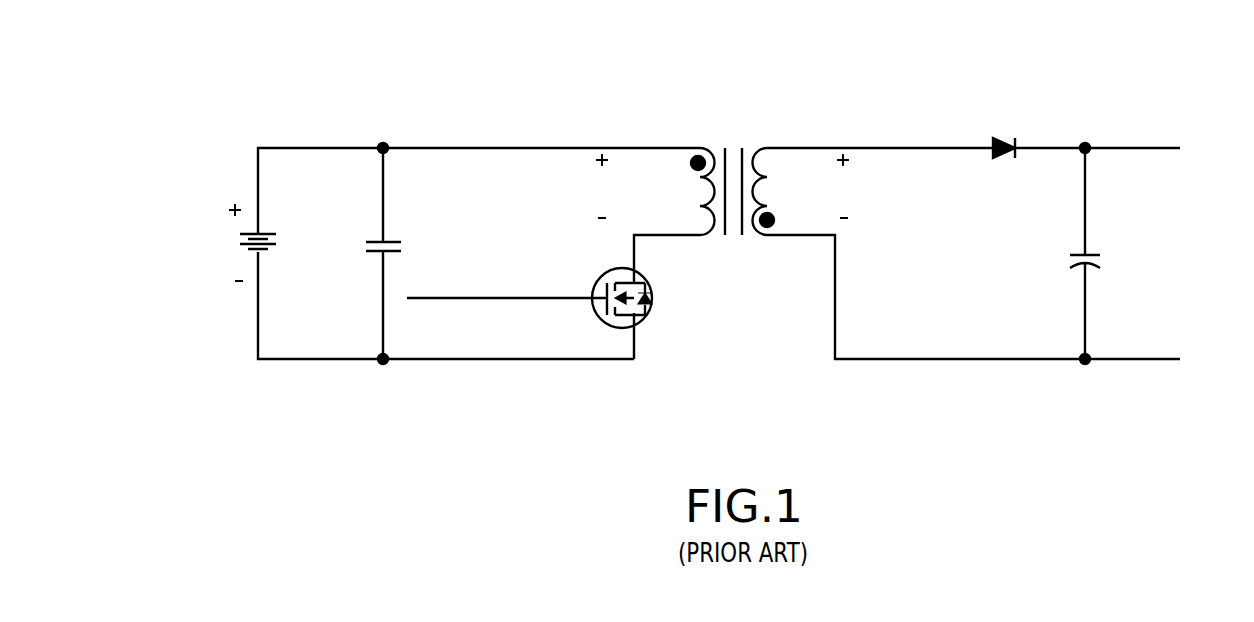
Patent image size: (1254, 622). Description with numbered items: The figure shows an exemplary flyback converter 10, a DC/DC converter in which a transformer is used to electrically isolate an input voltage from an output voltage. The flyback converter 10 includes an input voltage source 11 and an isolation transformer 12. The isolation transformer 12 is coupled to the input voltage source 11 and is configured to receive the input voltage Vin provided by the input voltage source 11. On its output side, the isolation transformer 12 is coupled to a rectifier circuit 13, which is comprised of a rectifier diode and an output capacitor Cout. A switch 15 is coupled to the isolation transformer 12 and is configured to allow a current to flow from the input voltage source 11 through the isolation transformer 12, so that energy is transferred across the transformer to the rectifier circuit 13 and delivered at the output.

The flyback converter 10 is at (240, 108).
The input voltage source 11 is at (190, 213).
The isolation transformer 12 is at (735, 133).
The rectifier circuit 13 is at (1067, 108).
The switch 15 is at (650, 330).